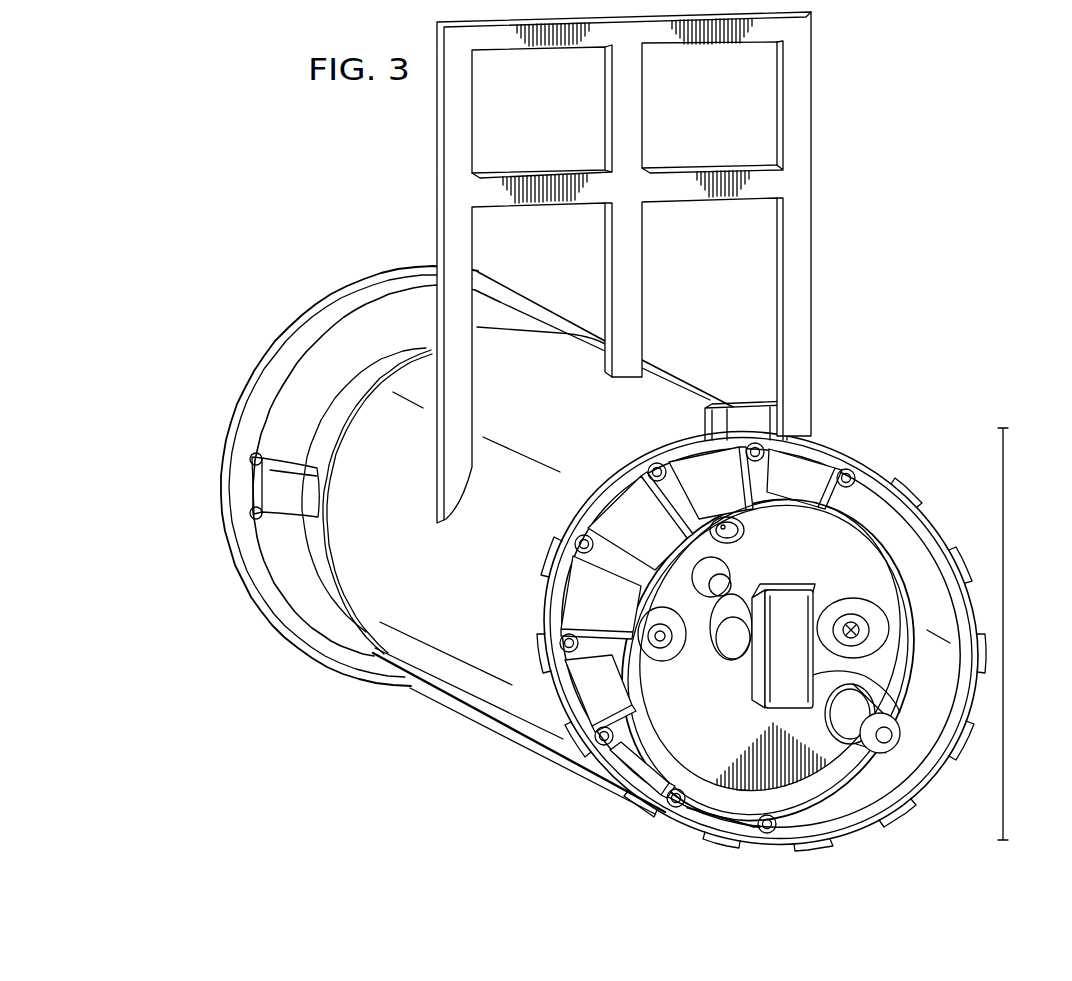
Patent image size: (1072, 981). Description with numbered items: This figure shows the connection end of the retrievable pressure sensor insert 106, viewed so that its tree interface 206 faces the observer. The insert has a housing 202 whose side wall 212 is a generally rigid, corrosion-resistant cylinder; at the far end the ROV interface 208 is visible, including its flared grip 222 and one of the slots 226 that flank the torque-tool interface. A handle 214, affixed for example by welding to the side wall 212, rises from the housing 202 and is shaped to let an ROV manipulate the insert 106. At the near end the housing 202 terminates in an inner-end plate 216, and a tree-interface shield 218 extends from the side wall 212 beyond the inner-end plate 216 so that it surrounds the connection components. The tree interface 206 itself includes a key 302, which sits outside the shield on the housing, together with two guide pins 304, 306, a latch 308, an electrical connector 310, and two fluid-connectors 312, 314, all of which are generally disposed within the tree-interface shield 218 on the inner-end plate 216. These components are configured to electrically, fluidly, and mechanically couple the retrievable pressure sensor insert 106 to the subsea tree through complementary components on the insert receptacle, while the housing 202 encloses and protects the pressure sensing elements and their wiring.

The retrievable pressure sensor insert 106 is at (924, 290).
The housing 202 is at (444, 706).
The tree interface 206 is at (1003, 628).
The ROV interface 208 is at (332, 299).
The side wall 212 is at (518, 740).
The handle 214 is at (812, 120).
The inner-end plate 216 is at (870, 672).
The tree-interface shield 218 is at (916, 528).
The flared grip 222 is at (236, 558).
The slot 226 is at (272, 482).
The key 302 is at (752, 405).
The guide pin 304 is at (730, 566).
The guide pin 306 is at (868, 748).
The latch 308 is at (757, 712).
The electrical connector 310 is at (752, 530).
The fluid-connector 312 is at (668, 660).
The fluid-connector 314 is at (855, 602).